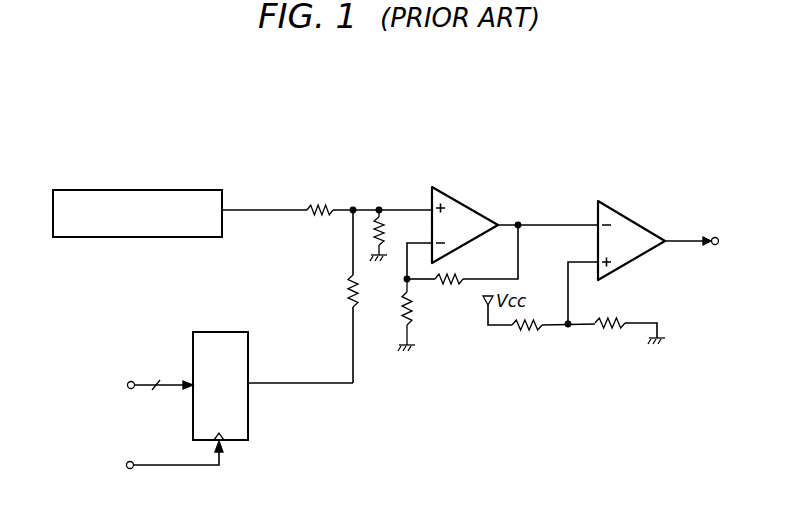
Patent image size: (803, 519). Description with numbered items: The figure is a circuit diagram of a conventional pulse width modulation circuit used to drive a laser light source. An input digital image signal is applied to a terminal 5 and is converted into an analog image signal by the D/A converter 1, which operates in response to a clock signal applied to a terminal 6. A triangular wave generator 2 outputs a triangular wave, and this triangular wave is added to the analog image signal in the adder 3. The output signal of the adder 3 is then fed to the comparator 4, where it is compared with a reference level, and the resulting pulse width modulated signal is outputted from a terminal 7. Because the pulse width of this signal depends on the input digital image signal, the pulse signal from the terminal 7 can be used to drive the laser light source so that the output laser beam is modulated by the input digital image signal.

The digital-to-analog converter 1 is at (248, 355).
The triangular wave generator 2 is at (154, 237).
The adder 3 is at (472, 215).
The comparator 4 is at (650, 232).
The terminal 5 is at (133, 381).
The terminal 6 is at (132, 461).
The terminal 7 is at (717, 236).